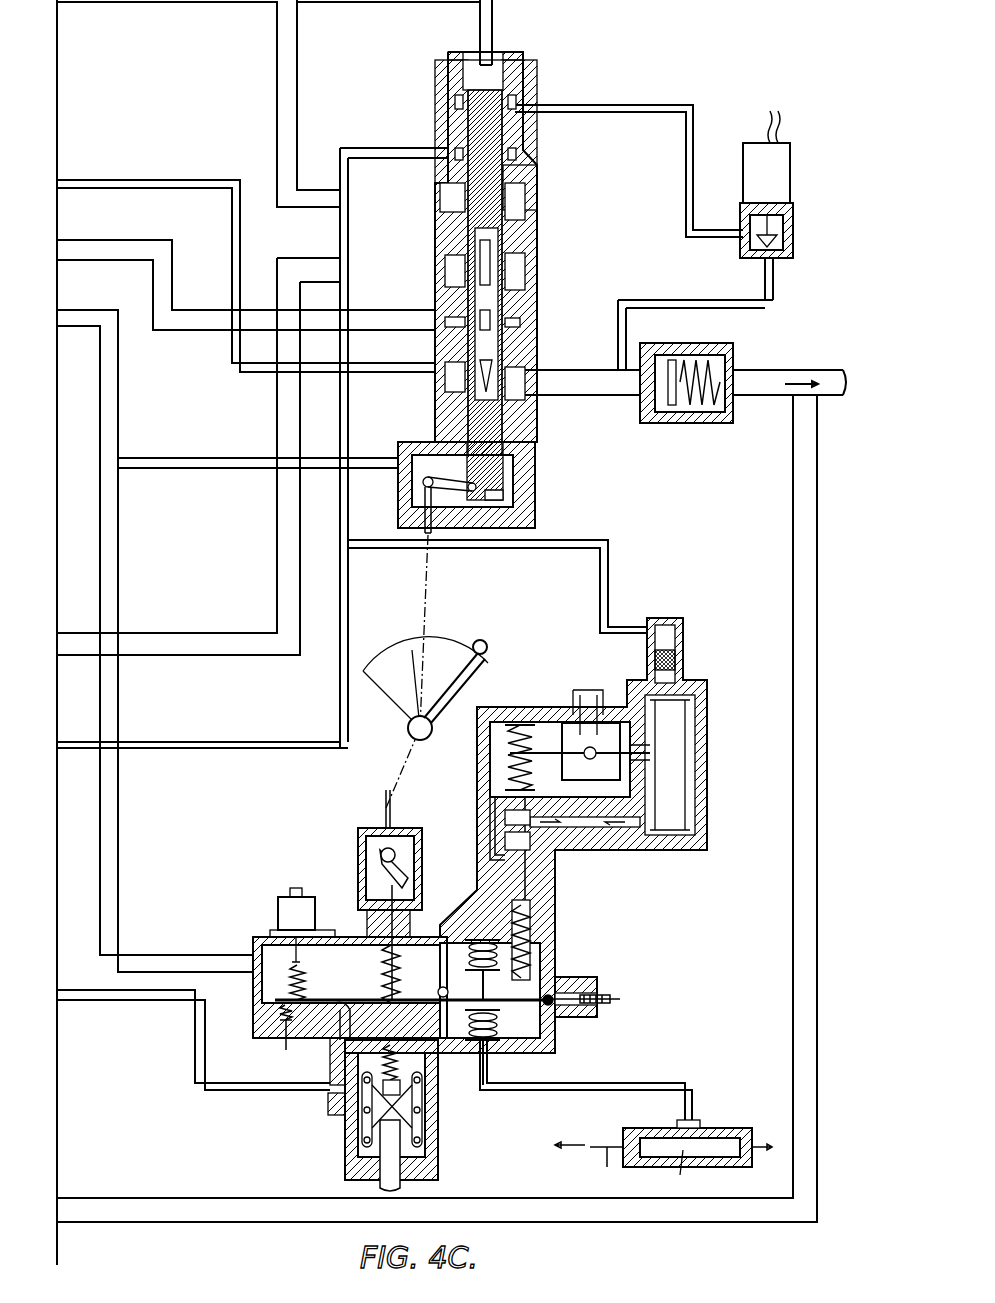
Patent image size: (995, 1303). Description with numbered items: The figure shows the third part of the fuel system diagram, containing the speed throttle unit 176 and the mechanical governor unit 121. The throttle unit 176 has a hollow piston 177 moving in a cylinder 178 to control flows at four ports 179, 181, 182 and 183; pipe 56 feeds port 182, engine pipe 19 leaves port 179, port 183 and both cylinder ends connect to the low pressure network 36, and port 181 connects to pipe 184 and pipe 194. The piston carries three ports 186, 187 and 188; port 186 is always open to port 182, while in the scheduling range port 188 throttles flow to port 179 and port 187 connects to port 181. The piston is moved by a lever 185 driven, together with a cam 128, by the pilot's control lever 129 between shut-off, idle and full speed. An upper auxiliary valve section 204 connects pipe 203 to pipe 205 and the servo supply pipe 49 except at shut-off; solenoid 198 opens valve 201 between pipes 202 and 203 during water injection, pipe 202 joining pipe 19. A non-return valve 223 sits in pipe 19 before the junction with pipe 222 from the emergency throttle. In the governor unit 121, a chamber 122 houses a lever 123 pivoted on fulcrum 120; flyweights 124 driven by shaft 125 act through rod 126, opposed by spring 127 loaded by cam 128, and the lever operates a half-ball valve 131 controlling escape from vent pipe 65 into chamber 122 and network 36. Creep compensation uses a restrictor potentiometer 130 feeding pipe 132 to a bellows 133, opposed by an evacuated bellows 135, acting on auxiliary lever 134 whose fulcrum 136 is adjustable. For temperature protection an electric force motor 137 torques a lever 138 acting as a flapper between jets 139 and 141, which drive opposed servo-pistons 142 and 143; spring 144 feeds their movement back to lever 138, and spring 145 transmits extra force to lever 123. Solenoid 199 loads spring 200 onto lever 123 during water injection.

The engine pipe 19 is at (765, 385).
The low pressure pipe network 36 is at (80, 3).
The servo supply pipe 49 is at (84, 740).
The pipe 56 is at (90, 640).
The vent pipe 65 is at (92, 992).
The fulcrum 120 is at (443, 998).
The mechanical governor unit 121 is at (328, 1105).
The chamber 122 is at (350, 987).
The lever 123 is at (280, 1008).
The flyweights 124 is at (368, 1122).
The shaft 125 is at (382, 1190).
The rod 126 is at (400, 1068).
The adjustable compression spring 127 is at (390, 965).
The cam 128 is at (385, 868).
The pilot's control lever 129 is at (472, 678).
The restrictor potentiometer 130 is at (660, 1130).
The half-ball valve 131 is at (342, 1035).
The pipe 132 is at (690, 1096).
The bellows 133 is at (490, 1042).
The auxiliary lever 134 is at (522, 1004).
The evacuated bellows 135 is at (470, 960).
The fulcrum 136 is at (560, 997).
The electric force motor 137 is at (572, 735).
The lever 138 is at (552, 745).
The jet 139 is at (652, 730).
The jet 141 is at (650, 790).
The servo-piston 142 is at (507, 818).
The servo-piston 143 is at (527, 845).
The spring 144 is at (507, 770).
The spring 145 is at (540, 910).
The speed throttle unit 176 is at (542, 95).
The hollow piston 177 is at (506, 210).
The cylinder 178 is at (493, 66).
The port 179 is at (515, 400).
The port 181 is at (521, 322).
The port 182 is at (521, 270).
The port 183 is at (515, 190).
The pipe 184 is at (63, 265).
The lever 185 is at (441, 470).
The port 186 is at (483, 255).
The port 187 is at (482, 320).
The port 188 is at (482, 374).
The pipe 194 is at (68, 195).
The solenoid 198 is at (752, 160).
The solenoid 199 is at (285, 915).
The spring 200 is at (290, 985).
The valve 201 is at (746, 250).
The pipe 202 is at (736, 305).
The pipe 203 is at (616, 110).
The auxiliary valve section 204 is at (452, 100).
The pipe 205 is at (385, 146).
The pipe 222 is at (90, 1212).
The non-return valve 223 is at (700, 423).